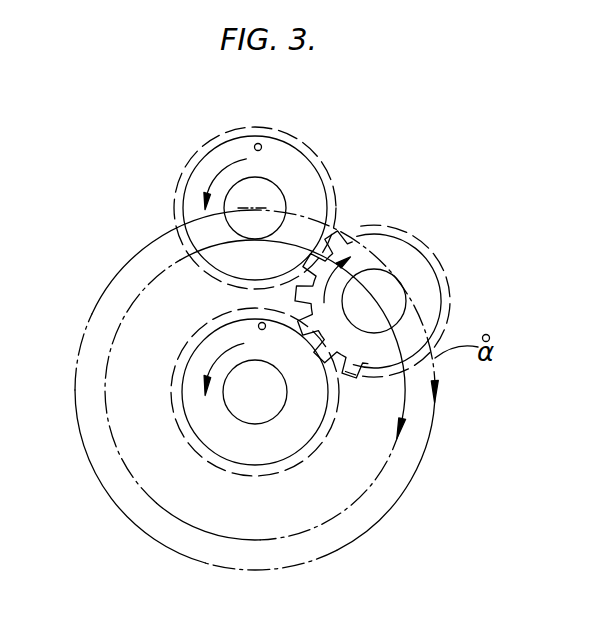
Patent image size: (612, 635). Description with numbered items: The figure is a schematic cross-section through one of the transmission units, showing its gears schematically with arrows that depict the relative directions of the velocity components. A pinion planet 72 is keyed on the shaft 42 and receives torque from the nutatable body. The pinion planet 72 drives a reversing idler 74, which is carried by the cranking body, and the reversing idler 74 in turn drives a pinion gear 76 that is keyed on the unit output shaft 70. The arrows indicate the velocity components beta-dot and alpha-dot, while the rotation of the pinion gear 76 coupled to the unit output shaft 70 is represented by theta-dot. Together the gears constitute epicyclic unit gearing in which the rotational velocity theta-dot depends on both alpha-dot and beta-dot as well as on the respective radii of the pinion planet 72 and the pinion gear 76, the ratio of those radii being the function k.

The pinion planet 72 is at (302, 184).
The shaft 42 is at (268, 206).
The reversing idler 74 is at (407, 268).
The pinion gear 76 is at (225, 422).
The unit output shaft 70 is at (265, 415).